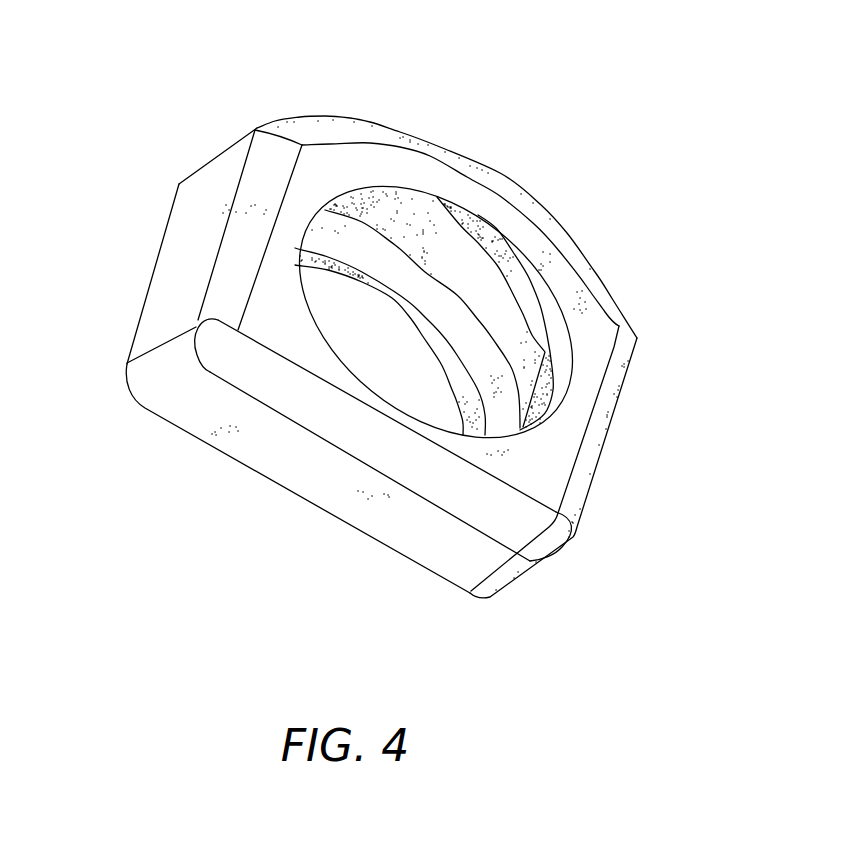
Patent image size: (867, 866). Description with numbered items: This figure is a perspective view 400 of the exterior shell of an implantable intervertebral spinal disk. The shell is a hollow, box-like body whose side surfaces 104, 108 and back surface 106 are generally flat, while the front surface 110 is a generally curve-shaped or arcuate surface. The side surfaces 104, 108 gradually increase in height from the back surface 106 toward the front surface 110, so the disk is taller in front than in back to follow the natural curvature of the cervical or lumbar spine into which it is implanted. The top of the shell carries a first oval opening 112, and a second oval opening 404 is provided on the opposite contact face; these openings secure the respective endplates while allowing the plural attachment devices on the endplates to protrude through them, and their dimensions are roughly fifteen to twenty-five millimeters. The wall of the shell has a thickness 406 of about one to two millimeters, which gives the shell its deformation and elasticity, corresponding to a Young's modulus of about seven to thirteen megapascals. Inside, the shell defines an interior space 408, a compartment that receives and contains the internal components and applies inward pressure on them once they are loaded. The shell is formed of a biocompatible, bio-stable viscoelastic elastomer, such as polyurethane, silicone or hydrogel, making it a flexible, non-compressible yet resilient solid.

The perspective view 400 is at (503, 29).
The side surface 104 is at (605, 443).
The back surface 106 is at (303, 500).
The side surface 108 is at (155, 257).
The front surface 110 is at (440, 146).
The first oval opening 112 is at (507, 437).
The second oval opening 404 is at (378, 340).
The thickness 406 is at (437, 330).
The interior space 408 is at (497, 372).